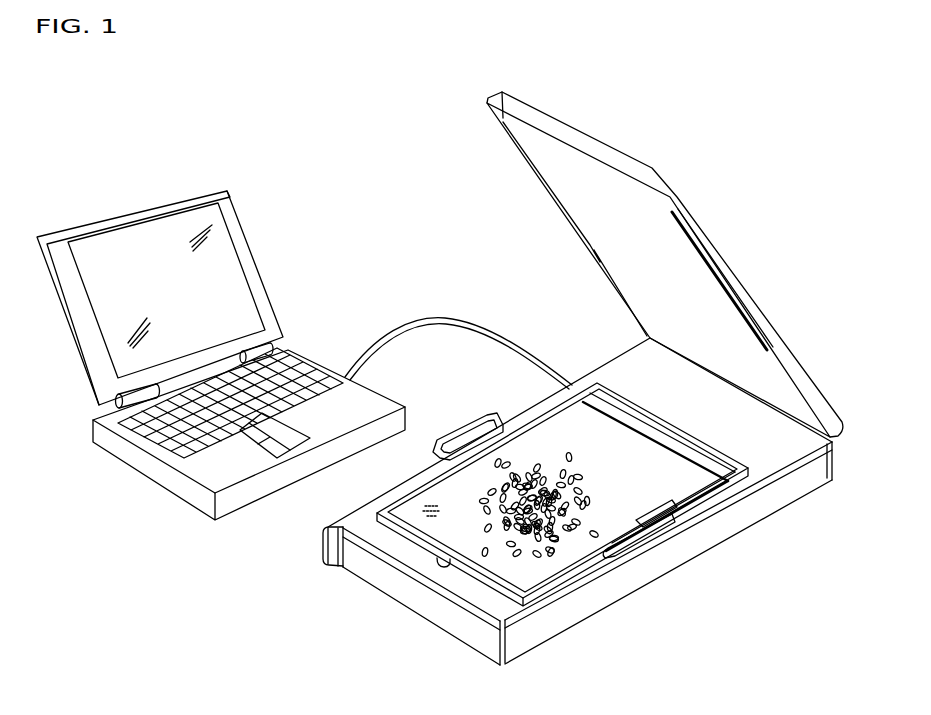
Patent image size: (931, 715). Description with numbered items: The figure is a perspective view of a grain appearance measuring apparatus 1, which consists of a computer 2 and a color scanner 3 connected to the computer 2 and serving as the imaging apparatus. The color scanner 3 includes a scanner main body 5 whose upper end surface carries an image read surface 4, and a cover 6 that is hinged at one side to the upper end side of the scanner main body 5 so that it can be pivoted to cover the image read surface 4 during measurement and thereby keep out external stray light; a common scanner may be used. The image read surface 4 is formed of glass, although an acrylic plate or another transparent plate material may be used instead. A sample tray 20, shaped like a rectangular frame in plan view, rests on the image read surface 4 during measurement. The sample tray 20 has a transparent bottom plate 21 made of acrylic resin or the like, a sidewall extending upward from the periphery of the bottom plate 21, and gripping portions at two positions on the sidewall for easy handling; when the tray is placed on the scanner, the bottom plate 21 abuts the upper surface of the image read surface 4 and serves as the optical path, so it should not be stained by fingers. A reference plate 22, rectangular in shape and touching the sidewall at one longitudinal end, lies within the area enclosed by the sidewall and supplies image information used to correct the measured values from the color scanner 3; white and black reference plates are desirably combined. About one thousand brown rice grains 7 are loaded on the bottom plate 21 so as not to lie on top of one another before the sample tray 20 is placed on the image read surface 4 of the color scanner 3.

The grain appearance measuring apparatus 1 is at (367, 142).
The computer 2 is at (173, 493).
The color scanner 3 is at (397, 602).
The image read surface 4 is at (748, 479).
The scanner main body 5 is at (453, 632).
The cover 6 is at (698, 224).
The brown rice grains 7 is at (548, 460).
The sample tray 20 is at (608, 565).
The bottom plate 21 is at (703, 490).
The reference plate 22 is at (730, 473).